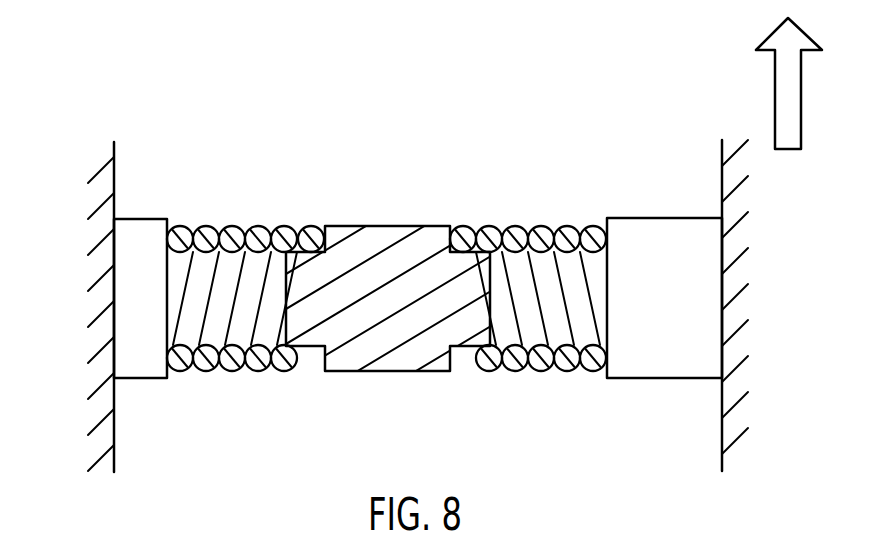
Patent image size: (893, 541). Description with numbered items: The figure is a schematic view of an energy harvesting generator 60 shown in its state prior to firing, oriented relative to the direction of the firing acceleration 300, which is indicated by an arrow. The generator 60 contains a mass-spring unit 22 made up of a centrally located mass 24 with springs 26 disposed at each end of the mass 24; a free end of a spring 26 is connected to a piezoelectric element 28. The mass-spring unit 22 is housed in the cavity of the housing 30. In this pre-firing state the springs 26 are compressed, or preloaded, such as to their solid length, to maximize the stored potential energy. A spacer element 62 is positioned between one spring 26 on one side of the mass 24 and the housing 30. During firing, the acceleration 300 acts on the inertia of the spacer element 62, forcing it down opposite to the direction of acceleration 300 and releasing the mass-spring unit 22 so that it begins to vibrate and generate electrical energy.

The mass-spring unit 22 is at (178, 188).
The mass 24 is at (385, 373).
The springs 26 is at (203, 371).
The piezoelectric element 28 is at (145, 234).
The housing 30 is at (113, 420).
The generator 60 is at (116, 118).
The spacer element 62 is at (670, 234).
The firing acceleration 300 is at (775, 98).